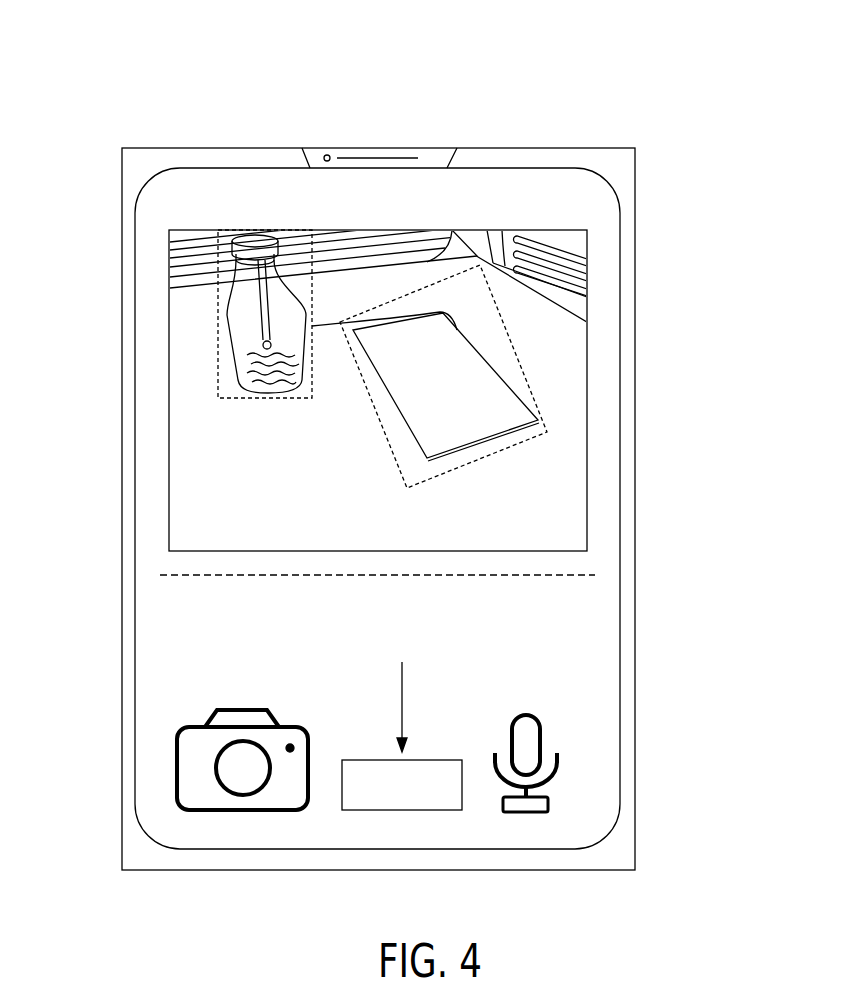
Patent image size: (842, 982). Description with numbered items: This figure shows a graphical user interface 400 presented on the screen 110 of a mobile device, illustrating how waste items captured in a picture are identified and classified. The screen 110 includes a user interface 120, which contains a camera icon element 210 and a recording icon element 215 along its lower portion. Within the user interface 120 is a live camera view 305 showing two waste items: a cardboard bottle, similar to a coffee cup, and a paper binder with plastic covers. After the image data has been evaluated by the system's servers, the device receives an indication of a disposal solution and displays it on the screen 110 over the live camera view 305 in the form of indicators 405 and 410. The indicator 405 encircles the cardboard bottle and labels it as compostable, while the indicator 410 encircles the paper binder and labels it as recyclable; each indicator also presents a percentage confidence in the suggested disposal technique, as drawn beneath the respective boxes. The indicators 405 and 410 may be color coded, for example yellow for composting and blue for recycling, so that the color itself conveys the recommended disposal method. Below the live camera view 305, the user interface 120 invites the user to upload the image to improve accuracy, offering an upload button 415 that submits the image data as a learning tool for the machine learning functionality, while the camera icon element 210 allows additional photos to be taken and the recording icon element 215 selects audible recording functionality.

The graphical user interface 400 is at (672, 90).
The screen 110 is at (635, 185).
The user interface 120 is at (620, 240).
The live camera view 305 is at (587, 288).
The indicator 405 is at (218, 322).
The indicator 410 is at (547, 432).
The camera icon element 210 is at (240, 710).
The recording icon element 215 is at (527, 715).
The upload button 415 is at (362, 760).